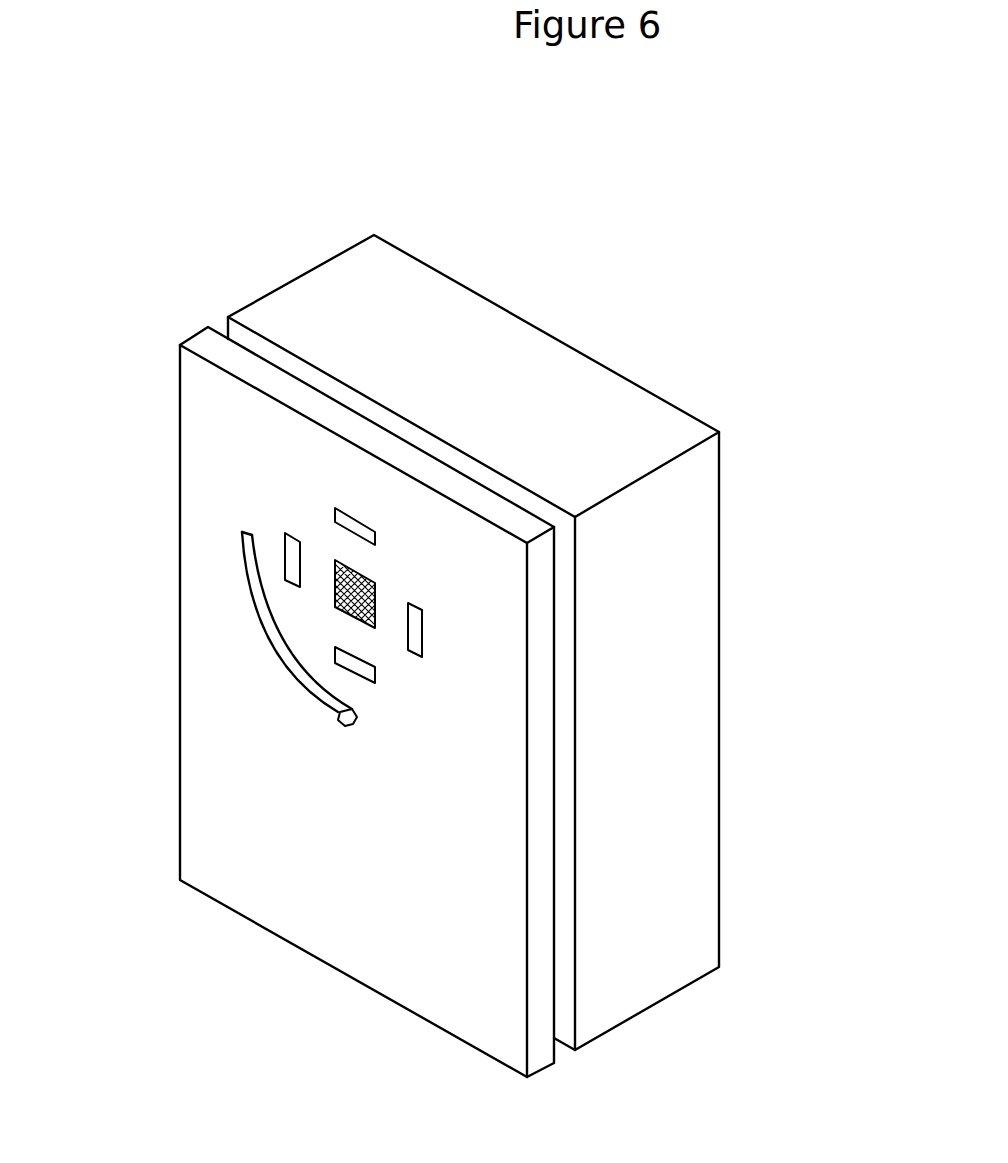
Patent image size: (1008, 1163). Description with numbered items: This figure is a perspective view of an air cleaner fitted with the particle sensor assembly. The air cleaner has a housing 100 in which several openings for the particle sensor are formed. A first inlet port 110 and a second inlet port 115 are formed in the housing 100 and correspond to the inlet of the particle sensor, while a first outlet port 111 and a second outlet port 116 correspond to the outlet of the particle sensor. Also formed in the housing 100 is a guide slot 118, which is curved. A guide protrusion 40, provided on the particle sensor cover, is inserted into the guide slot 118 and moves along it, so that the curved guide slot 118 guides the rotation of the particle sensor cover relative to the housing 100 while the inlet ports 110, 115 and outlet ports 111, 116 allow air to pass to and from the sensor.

The housing 100 is at (240, 468).
The first inlet port 110 is at (365, 670).
The first outlet port 111 is at (356, 522).
The second inlet port 115 is at (294, 561).
The second outlet port 116 is at (416, 614).
The guide slot 118 is at (270, 627).
The guide protrusion 40 is at (338, 719).